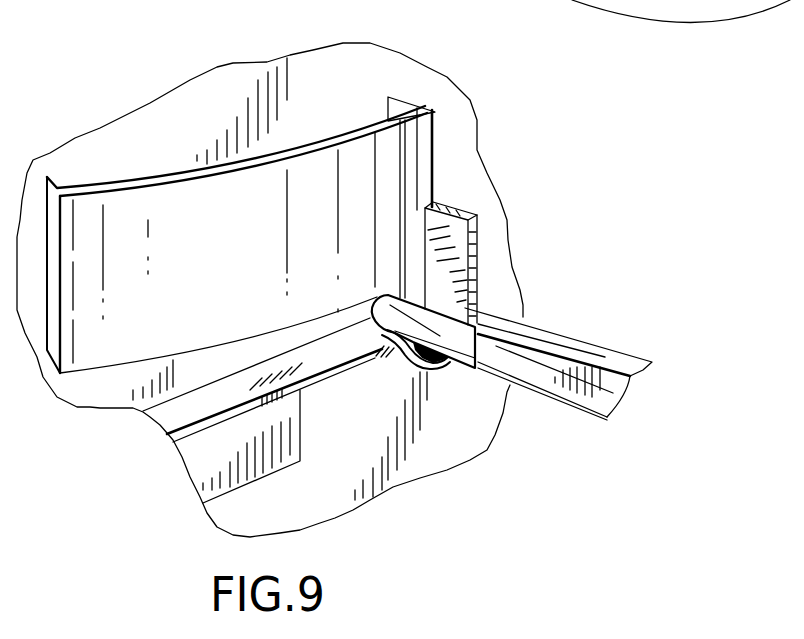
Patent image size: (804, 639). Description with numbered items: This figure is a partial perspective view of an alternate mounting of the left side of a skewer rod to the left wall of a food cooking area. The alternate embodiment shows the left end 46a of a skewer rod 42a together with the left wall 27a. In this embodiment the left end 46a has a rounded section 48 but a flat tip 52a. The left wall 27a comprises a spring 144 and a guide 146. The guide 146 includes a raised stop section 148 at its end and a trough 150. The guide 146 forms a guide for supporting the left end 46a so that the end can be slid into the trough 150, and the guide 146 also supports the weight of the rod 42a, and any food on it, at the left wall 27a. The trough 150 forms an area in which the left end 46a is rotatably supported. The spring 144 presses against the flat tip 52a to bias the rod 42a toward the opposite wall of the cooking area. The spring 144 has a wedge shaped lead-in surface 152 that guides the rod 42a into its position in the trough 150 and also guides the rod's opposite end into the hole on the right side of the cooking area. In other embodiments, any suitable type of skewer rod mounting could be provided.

The left wall 27a is at (327, 67).
The spring 144 is at (160, 192).
The raised stop section 148 is at (451, 207).
The rounded section 48 is at (441, 326).
The flat tip 52a is at (358, 301).
The skewer rod 42a is at (563, 341).
The left end 46a is at (395, 341).
The trough 150 is at (446, 364).
The guide 146 is at (153, 424).
The wedge shaped lead-in surface 152 is at (100, 353).